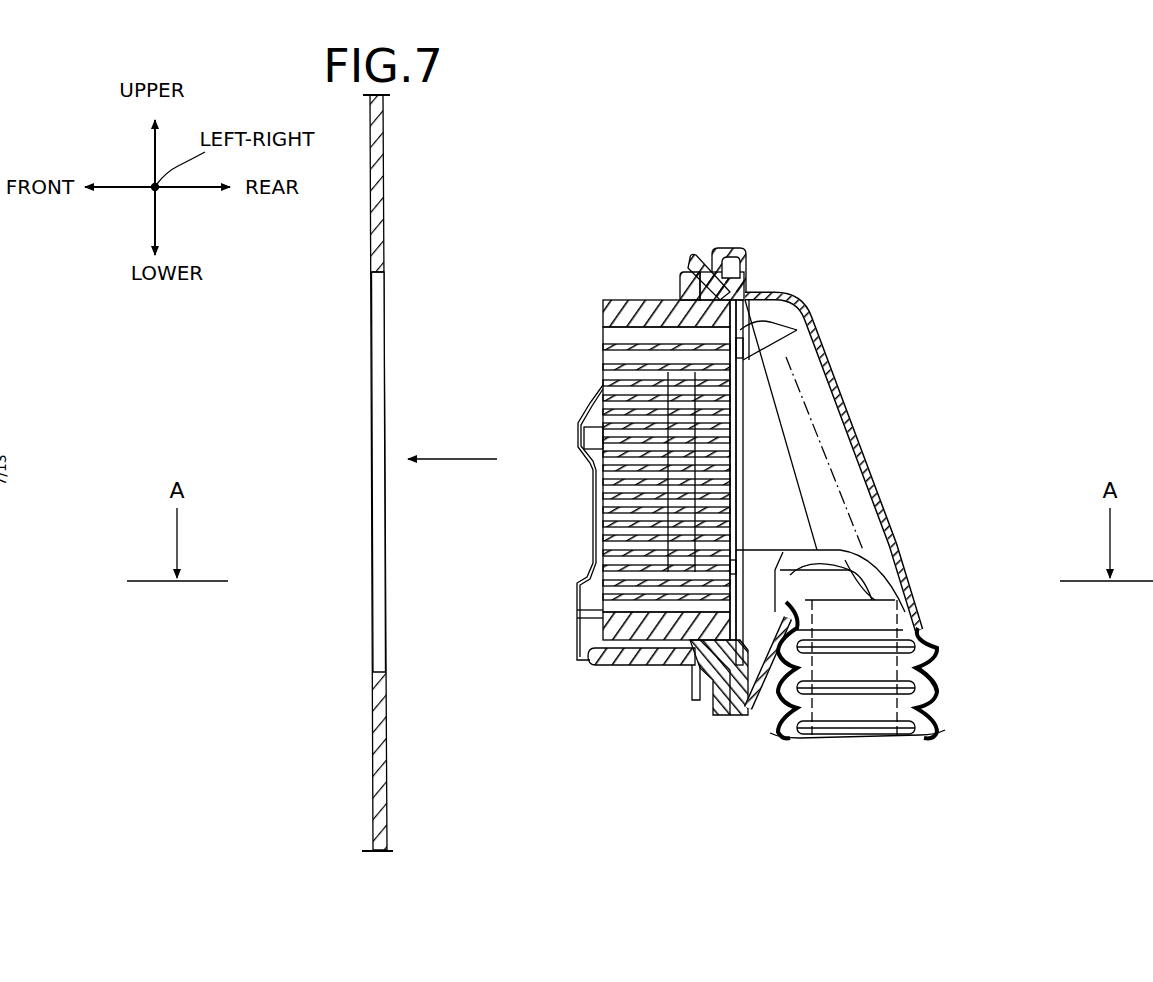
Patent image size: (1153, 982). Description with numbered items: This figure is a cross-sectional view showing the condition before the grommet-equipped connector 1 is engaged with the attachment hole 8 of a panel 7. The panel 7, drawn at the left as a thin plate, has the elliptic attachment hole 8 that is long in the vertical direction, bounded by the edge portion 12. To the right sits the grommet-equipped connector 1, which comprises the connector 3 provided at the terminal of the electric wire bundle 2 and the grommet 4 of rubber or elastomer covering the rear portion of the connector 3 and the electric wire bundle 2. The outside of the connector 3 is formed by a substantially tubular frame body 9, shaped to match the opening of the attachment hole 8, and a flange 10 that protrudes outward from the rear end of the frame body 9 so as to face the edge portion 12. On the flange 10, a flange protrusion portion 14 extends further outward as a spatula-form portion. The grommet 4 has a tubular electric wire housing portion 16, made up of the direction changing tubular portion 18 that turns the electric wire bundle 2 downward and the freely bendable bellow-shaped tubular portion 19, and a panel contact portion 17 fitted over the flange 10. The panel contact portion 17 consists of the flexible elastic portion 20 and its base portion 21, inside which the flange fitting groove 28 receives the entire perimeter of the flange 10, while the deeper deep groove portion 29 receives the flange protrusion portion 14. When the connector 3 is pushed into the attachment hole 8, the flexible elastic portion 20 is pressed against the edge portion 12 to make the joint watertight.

The grommet-equipped connector 1 is at (853, 446).
The electric wire bundle 2 is at (861, 502).
The connector 3 is at (616, 298).
The grommet 4 is at (888, 524).
The panel 7 is at (393, 473).
The attachment hole 8 is at (380, 272).
The frame body 9 is at (600, 665).
The flange 10 is at (690, 680).
The edge portion 12 is at (384, 267).
The flange protrusion portion 14 is at (708, 716).
The electric wire housing portion 16 is at (950, 663).
The panel contact portion 17 is at (699, 200).
The direction changing tubular portion 18 is at (905, 588).
The bellow-shaped tubular portion 19 is at (935, 686).
The flexible elastic portion 20 is at (684, 270).
The base portion 21 is at (718, 253).
The flange fitting groove 28 is at (742, 268).
The deep groove portion 29 is at (721, 715).